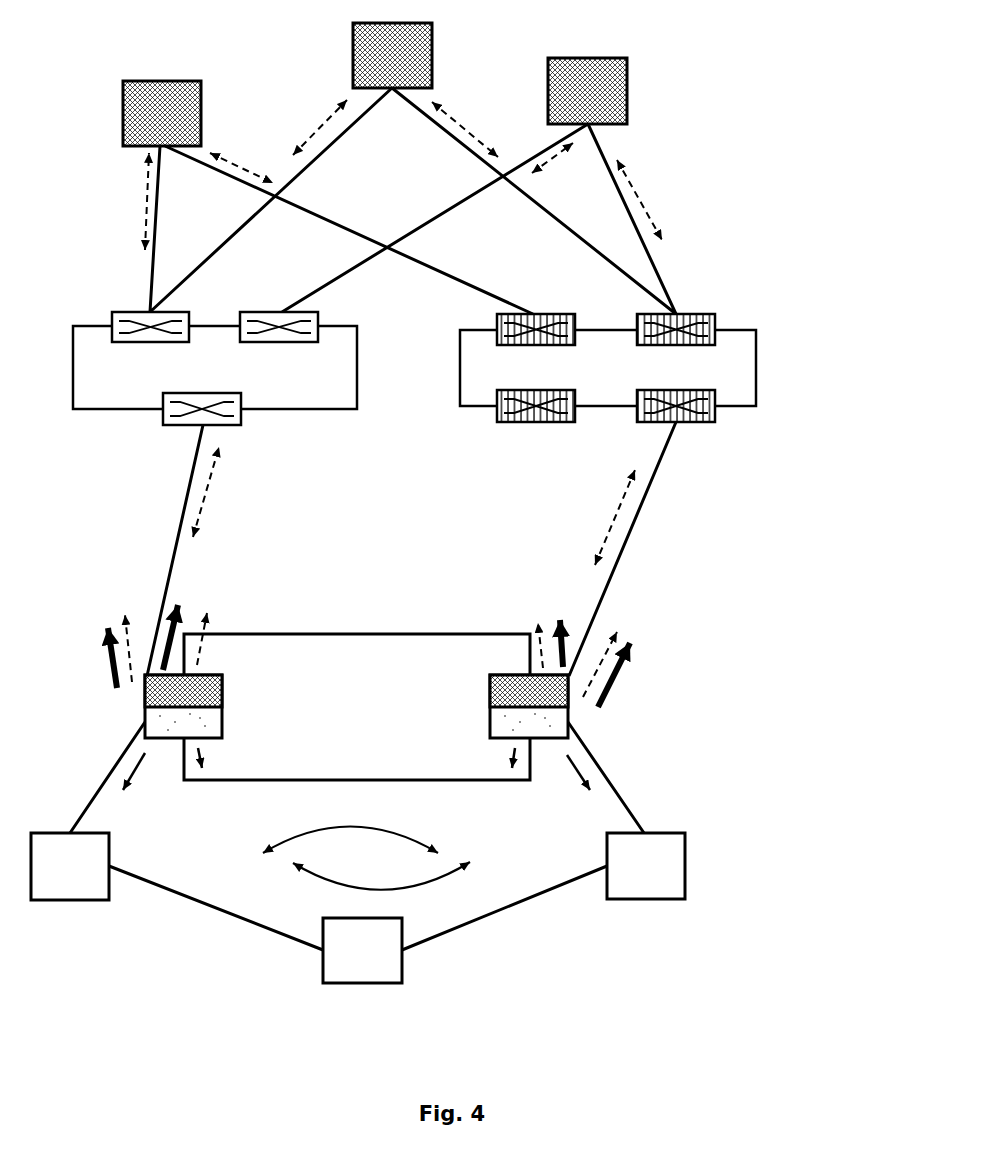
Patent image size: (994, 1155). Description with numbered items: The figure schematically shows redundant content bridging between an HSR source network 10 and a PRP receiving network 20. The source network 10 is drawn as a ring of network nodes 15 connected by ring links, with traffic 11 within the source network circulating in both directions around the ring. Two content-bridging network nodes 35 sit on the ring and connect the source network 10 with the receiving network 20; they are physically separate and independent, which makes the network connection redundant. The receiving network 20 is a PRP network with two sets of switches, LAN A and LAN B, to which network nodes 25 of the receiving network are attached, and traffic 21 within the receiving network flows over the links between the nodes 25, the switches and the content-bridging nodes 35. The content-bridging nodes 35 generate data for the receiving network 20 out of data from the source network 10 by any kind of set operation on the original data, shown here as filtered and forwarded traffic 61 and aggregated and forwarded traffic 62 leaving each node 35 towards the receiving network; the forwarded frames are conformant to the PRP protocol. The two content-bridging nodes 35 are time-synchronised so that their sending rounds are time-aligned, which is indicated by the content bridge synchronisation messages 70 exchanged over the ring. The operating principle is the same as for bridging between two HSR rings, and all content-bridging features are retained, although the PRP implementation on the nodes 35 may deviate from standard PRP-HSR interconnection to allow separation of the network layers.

The source network 10 is at (508, 943).
The traffic within the source network 11 is at (366, 857).
The network node in the source network 15 is at (677, 962).
The receiving network 20 is at (457, 324).
The traffic within the receiving network 21 is at (390, 331).
The network node in the receiving network 25 is at (697, 65).
The content-bridging network node 35 is at (452, 678).
The filtered and forwarded traffic 61 is at (368, 640).
The aggregated and forwarded traffic 62 is at (364, 641).
The content bridge synchronisation message 70 is at (356, 772).